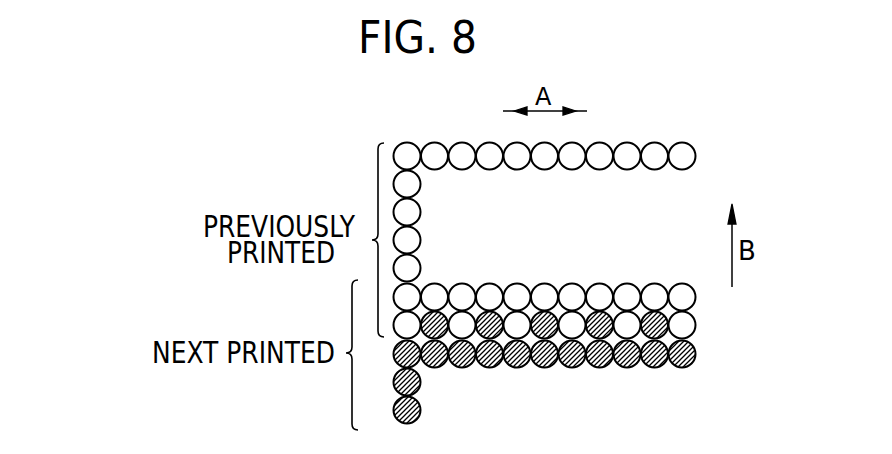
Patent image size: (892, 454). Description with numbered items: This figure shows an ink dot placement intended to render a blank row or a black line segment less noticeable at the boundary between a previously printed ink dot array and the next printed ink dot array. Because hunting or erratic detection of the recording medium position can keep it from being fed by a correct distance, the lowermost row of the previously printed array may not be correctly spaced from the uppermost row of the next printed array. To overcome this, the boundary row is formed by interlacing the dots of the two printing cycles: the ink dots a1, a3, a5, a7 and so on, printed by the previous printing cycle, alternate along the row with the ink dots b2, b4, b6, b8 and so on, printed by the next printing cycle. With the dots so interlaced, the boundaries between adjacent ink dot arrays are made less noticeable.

The ink dot a1 is at (407, 324).
The ink dot a3 is at (461, 324).
The ink dot a5 is at (517, 324).
The ink dot a7 is at (572, 324).
The ink dot b2 is at (435, 328).
The ink dot b4 is at (489, 328).
The ink dot b6 is at (544, 328).
The ink dot b8 is at (600, 328).